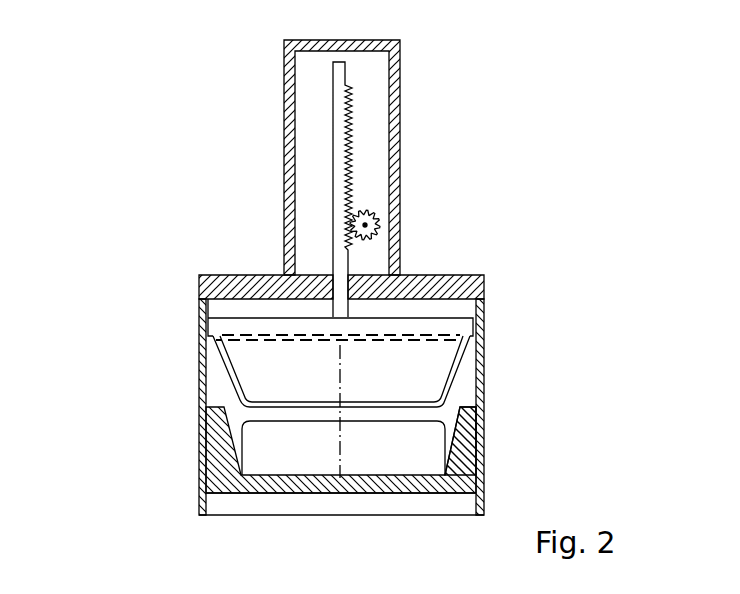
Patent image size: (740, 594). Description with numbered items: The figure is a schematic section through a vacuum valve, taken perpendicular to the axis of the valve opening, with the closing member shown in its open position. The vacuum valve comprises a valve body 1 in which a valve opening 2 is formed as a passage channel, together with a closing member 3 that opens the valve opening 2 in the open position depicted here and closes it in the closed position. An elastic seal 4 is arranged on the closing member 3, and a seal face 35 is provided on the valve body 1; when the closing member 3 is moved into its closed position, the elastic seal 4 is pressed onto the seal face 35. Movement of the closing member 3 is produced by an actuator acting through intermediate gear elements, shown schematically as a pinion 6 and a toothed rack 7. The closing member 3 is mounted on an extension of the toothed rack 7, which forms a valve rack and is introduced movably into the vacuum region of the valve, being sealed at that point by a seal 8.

The valve body 1 is at (216, 438).
The valve opening 2 is at (268, 457).
The closing member 3 is at (222, 371).
The elastic seal 4 is at (236, 392).
The pinion 6 is at (370, 212).
The toothed rack 7 is at (352, 160).
The seal 8 is at (390, 270).
The seal face 35 is at (470, 393).